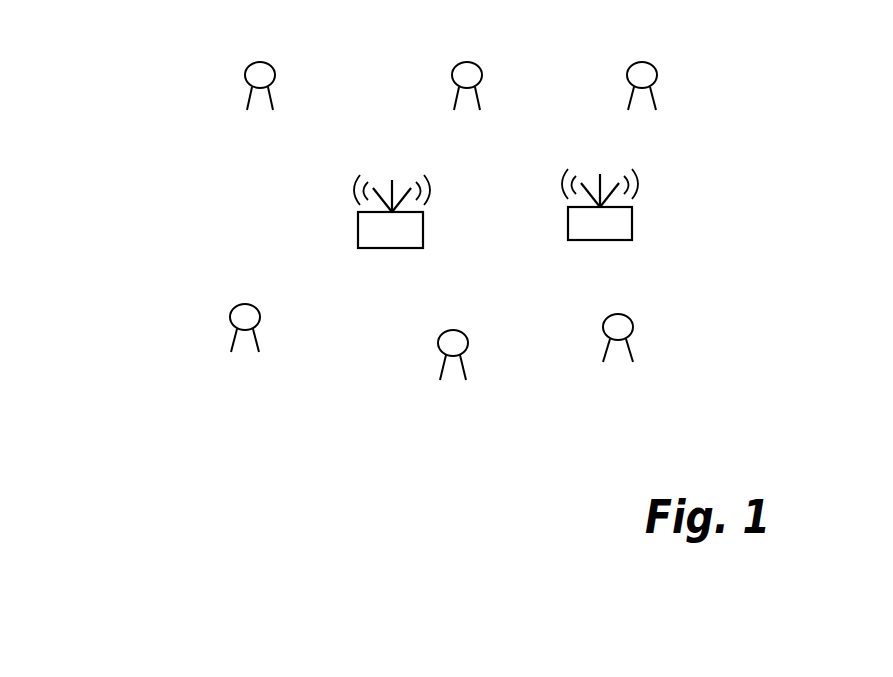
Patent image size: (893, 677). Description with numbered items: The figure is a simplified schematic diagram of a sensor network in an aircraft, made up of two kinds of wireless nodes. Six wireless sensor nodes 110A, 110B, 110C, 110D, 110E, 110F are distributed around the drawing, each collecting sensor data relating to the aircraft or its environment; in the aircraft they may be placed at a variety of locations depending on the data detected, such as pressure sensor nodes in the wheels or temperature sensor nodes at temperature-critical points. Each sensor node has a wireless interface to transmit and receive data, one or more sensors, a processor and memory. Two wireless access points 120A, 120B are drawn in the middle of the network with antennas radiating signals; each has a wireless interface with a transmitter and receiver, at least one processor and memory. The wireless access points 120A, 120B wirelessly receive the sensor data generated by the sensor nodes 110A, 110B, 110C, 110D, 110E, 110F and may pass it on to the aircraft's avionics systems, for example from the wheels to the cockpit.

The wireless sensor node 110A is at (247, 63).
The wireless sensor node 110B is at (467, 62).
The wireless sensor node 110C is at (645, 62).
The wireless sensor node 110D is at (634, 331).
The wireless sensor node 110E is at (453, 356).
The wireless sensor node 110F is at (230, 318).
The wireless access point 120A is at (358, 228).
The wireless access point 120B is at (632, 222).